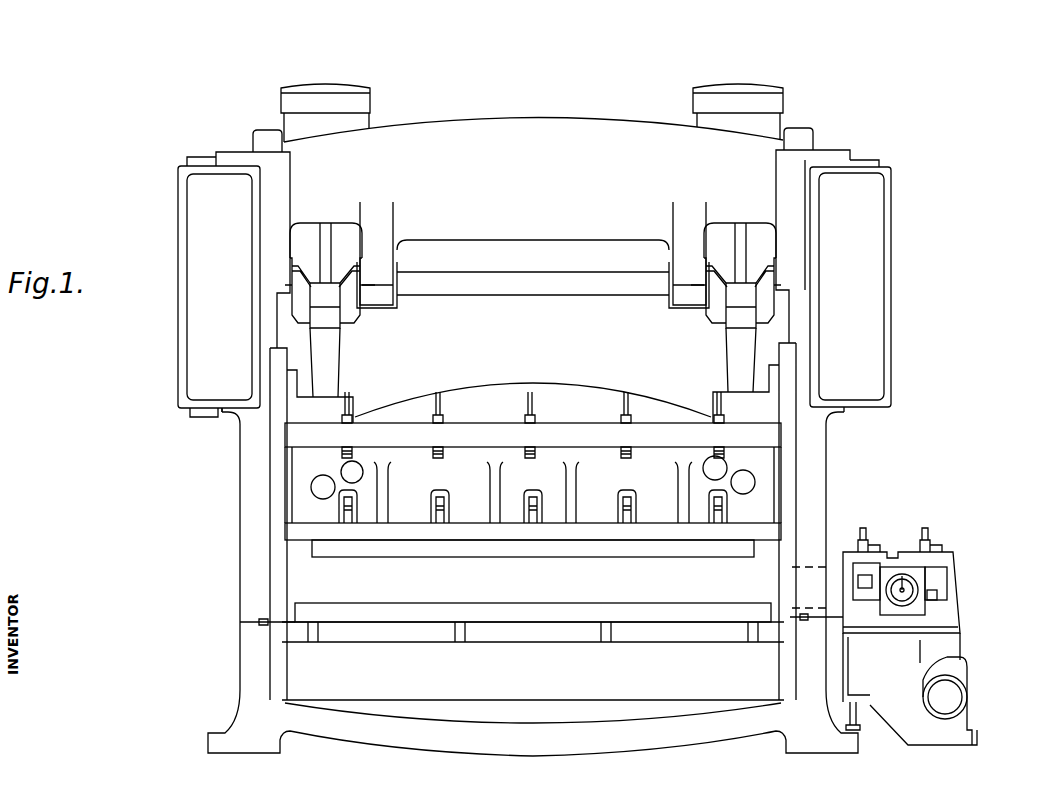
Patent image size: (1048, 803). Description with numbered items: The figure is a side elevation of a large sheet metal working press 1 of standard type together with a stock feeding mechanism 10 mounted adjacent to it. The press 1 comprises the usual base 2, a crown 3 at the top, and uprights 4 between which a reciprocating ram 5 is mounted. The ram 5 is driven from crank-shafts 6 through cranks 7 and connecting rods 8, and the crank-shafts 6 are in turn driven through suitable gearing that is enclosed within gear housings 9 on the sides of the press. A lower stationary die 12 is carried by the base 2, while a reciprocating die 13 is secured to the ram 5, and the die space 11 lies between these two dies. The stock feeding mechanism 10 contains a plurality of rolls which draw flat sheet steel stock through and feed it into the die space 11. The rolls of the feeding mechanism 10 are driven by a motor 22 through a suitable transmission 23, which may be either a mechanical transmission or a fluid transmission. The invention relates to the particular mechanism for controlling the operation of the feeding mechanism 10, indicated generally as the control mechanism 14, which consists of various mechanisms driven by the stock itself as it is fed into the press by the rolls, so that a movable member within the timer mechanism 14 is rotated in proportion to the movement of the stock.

The metal working press 1 is at (231, 602).
The base 2 is at (515, 750).
The crown 3 is at (468, 128).
The uprights 4 is at (243, 522).
The reciprocating ram 5 is at (600, 400).
The crank-shafts 6 is at (543, 292).
The cranks 7 is at (352, 313).
The connecting rods 8 is at (330, 382).
The gear housings 9 is at (192, 196).
The stock feeding mechanism 10 is at (937, 617).
The die space 11 is at (638, 592).
The lower stationary die 12 is at (515, 606).
The reciprocating die 13 is at (458, 556).
The control mechanism 14 is at (925, 570).
The motor 22 is at (953, 700).
The transmission 23 is at (958, 665).